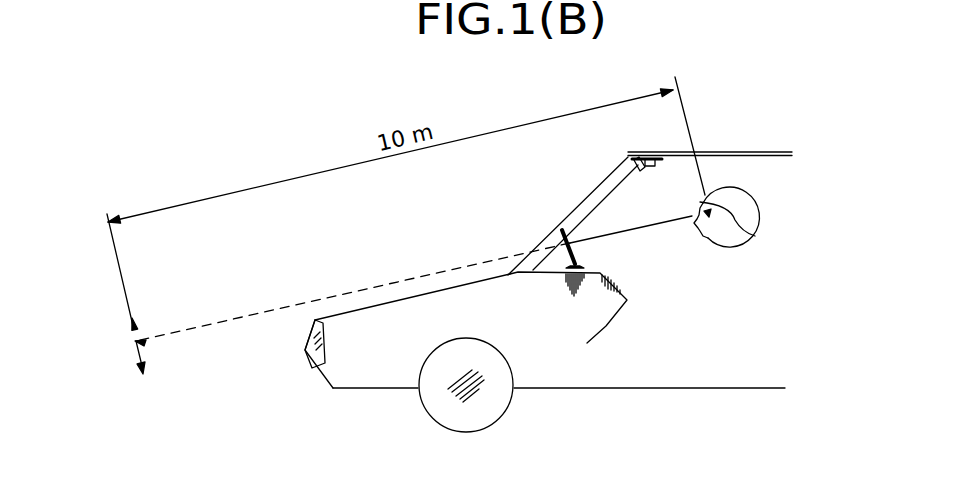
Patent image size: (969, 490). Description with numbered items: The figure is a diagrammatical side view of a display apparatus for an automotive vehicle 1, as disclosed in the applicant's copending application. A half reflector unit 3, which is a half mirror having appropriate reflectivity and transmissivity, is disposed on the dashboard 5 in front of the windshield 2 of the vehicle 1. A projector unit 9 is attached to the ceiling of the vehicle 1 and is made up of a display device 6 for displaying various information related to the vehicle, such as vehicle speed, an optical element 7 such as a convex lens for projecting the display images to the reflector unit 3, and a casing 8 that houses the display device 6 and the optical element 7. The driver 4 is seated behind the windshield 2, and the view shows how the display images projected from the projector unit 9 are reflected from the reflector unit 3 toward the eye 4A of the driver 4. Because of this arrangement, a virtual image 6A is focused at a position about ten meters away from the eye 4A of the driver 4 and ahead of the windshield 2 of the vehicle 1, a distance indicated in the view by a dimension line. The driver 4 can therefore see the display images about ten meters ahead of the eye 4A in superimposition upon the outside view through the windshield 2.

The automotive vehicle 1 is at (697, 390).
The windshield 2 is at (570, 208).
The half reflector unit 3 is at (557, 233).
The driver 4 is at (723, 187).
The eye 4A is at (708, 225).
The dashboard 5 is at (535, 268).
The display device 6 is at (637, 158).
The virtual image 6A is at (138, 338).
The optical element 7 is at (627, 162).
The casing 8 is at (638, 168).
The projector unit 9 is at (655, 170).